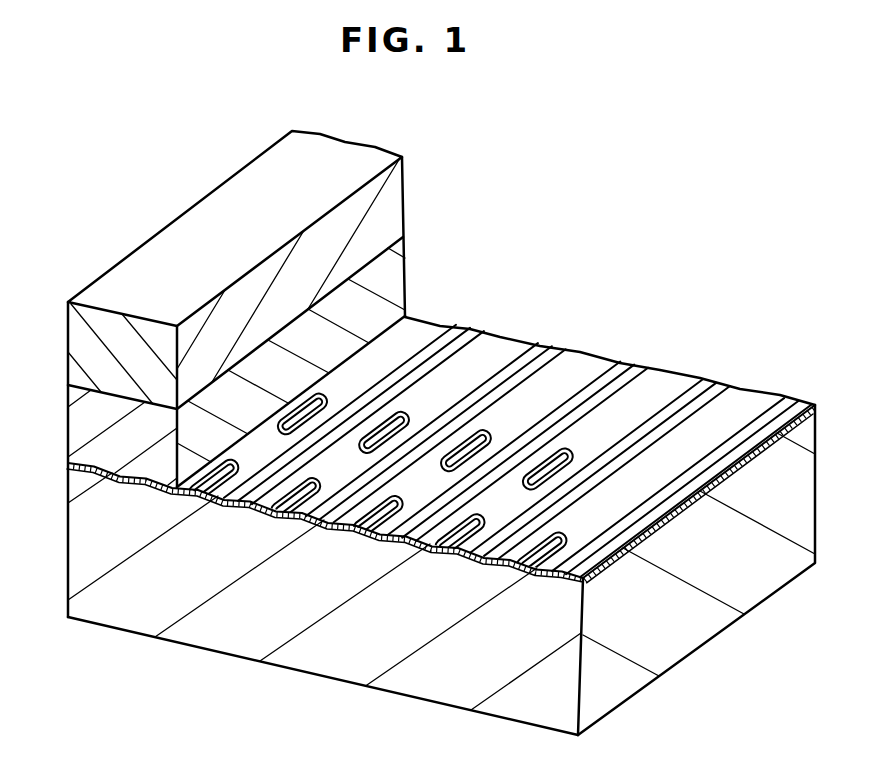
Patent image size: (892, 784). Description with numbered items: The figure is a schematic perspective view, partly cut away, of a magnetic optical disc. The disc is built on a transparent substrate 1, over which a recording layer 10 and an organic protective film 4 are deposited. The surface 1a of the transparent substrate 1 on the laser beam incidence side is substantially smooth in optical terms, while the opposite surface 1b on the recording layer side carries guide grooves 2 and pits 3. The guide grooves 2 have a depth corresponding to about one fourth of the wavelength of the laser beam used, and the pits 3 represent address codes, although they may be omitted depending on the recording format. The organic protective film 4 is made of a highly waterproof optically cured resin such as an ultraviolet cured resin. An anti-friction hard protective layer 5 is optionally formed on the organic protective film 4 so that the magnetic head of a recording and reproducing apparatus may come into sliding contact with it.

The transparent substrate 1 is at (750, 582).
The surface on the laser beam incidence side 1a is at (535, 722).
The surface on the recording layer side 1b is at (530, 588).
The guide grooves 2 is at (450, 333).
The pits 3 is at (390, 425).
The organic protective film 4 is at (85, 425).
The anti-friction hard protective layer 5 is at (85, 340).
The recording layer 10 is at (818, 402).